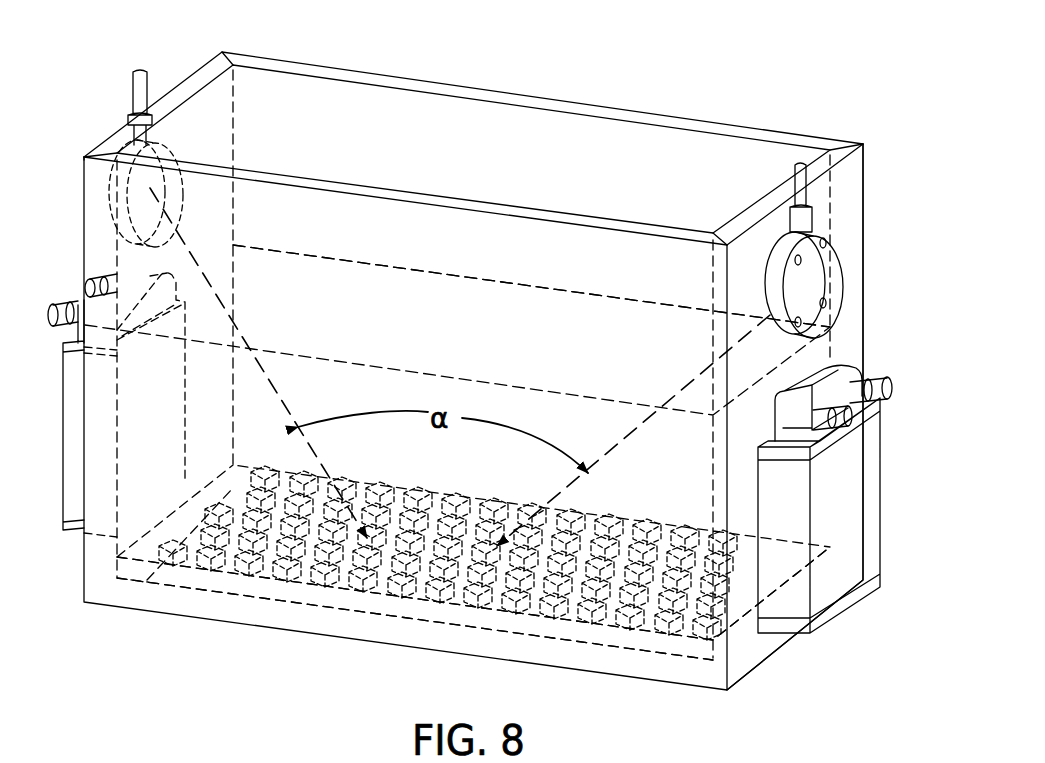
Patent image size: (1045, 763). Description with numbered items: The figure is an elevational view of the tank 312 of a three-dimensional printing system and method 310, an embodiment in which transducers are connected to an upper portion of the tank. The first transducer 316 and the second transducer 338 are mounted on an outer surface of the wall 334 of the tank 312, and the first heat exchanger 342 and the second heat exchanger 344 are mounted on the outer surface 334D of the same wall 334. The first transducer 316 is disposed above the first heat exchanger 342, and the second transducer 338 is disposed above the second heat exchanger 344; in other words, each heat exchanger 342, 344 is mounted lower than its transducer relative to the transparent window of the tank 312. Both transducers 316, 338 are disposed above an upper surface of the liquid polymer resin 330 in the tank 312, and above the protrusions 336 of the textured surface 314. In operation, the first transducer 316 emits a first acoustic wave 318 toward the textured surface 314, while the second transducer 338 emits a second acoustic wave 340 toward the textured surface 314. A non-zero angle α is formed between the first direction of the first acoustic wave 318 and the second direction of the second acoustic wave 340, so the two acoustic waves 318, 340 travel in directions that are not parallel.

The 3D printing system and method 310 is at (160, 45).
The tank 312 is at (603, 100).
The textured surface 314 is at (443, 620).
The first transducer 316 is at (107, 210).
The first acoustic wave 318 is at (250, 333).
The liquid polymer resin 330 is at (427, 303).
The wall 334 is at (865, 177).
The outer surface 334D is at (845, 205).
The protrusions 336 is at (287, 593).
The second transducer 338 is at (815, 278).
The second acoustic wave 340 is at (692, 368).
The first heat exchanger 342 is at (63, 483).
The second heat exchanger 344 is at (843, 562).